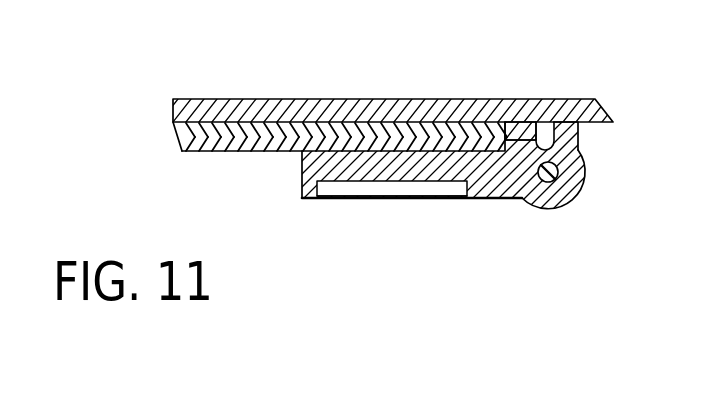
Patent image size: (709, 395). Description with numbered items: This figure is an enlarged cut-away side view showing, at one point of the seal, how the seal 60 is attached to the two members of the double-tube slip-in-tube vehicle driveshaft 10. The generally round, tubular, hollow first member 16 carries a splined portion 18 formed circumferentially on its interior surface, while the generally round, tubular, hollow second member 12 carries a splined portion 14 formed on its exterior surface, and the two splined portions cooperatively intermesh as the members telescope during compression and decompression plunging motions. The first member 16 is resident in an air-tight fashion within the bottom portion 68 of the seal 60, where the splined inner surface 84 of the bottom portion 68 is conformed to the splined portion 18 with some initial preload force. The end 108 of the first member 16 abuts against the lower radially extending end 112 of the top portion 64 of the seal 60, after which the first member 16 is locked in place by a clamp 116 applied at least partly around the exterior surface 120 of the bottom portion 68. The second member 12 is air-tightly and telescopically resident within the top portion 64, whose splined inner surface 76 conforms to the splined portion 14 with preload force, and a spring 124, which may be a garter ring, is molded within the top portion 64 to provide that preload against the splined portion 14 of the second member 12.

The vehicle driveshaft 10 is at (180, 72).
The second member 12 is at (278, 98).
The splined portion 14 is at (533, 120).
The first member 16 is at (224, 141).
The splined portion 18 is at (257, 152).
The seal 60 is at (441, 159).
The top portion 64 is at (572, 135).
The bottom portion 68 is at (378, 168).
The splined inner surface 76 is at (546, 140).
The splined inner surface 84 is at (337, 152).
The end 108 is at (476, 123).
The lower radially extending end 112 is at (579, 141).
The clamp 116 is at (420, 199).
The exterior surface 120 is at (490, 200).
The spring 124 is at (559, 174).